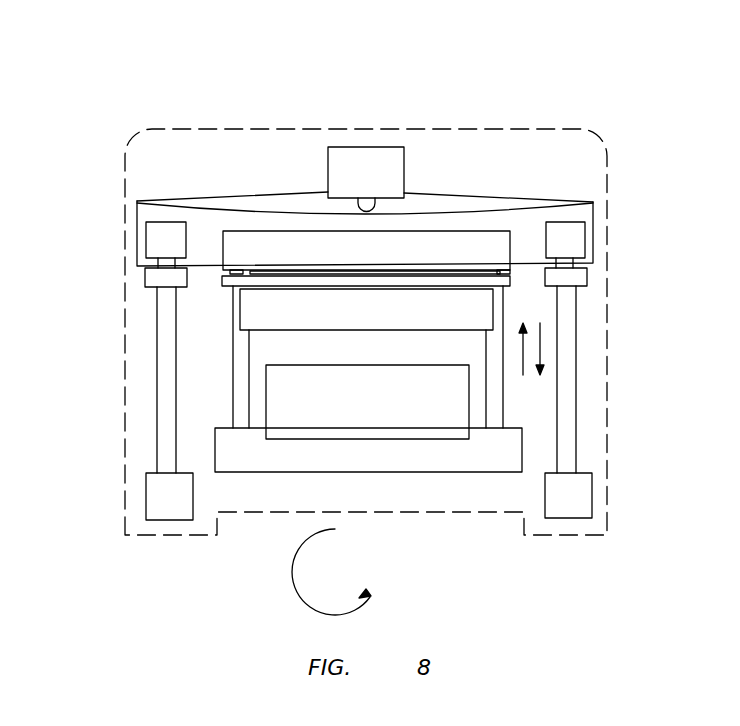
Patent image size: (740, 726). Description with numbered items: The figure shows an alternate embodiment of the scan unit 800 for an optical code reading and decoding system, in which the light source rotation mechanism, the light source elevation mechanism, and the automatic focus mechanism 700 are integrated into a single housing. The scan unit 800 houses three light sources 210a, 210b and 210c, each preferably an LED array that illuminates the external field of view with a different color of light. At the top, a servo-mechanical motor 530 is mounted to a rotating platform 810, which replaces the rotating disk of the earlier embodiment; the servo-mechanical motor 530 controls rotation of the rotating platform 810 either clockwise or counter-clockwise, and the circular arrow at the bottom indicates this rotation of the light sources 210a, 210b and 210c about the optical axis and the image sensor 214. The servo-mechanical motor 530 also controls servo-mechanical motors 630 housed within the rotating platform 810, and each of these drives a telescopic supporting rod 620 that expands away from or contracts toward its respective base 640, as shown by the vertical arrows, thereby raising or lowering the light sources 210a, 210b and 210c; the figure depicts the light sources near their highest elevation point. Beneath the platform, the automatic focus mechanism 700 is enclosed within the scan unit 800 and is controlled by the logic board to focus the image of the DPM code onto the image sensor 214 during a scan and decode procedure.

The scan unit 800 is at (353, 99).
The rotating platform 810 is at (586, 237).
The servo-mechanical motor 530 is at (380, 170).
The servo-mechanical motors 630 is at (146, 243).
The base 640 is at (145, 277).
The telescopic supporting rods 620 is at (240, 372).
The image sensor 214 is at (263, 312).
The automatic focus mechanism 700 is at (305, 404).
The light source 210a is at (568, 518).
The light source 210b is at (377, 472).
The light source 210c is at (168, 520).